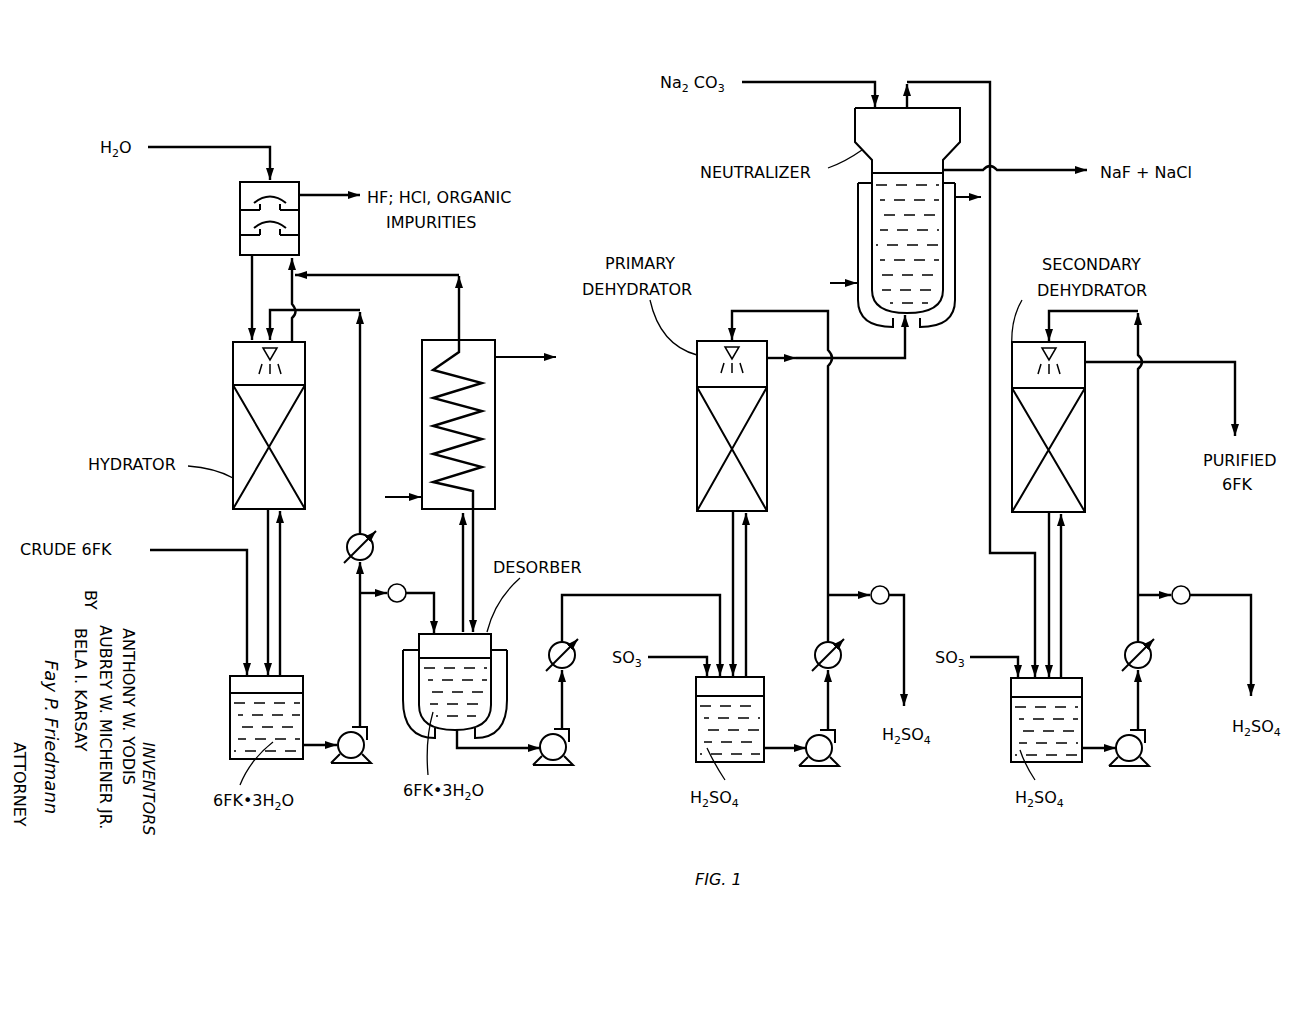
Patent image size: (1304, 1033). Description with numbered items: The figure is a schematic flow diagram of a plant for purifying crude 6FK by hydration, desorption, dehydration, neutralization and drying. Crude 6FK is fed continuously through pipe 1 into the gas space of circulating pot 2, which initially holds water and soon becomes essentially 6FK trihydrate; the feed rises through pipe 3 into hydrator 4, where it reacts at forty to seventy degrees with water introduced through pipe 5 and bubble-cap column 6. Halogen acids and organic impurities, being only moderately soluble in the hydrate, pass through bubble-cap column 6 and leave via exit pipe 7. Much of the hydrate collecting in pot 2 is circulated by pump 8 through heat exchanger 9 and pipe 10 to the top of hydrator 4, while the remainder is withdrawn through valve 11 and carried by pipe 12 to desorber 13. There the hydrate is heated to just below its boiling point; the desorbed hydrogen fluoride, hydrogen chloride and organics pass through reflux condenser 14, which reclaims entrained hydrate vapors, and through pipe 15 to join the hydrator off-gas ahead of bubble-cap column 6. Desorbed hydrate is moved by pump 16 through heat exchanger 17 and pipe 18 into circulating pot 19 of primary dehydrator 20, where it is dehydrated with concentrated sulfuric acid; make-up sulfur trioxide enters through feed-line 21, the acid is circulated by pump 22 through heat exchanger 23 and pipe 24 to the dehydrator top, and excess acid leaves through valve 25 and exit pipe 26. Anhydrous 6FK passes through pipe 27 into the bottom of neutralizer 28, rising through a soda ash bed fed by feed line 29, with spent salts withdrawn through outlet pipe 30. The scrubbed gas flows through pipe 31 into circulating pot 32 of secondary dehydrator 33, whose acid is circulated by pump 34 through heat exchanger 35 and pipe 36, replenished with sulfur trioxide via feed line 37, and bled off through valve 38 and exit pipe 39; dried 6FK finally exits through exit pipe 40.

The pipe 1 is at (247, 586).
The circulating pot 2 is at (230, 723).
The pipe 3 is at (280, 610).
The hydrator 4 is at (233, 412).
The pipe 5 is at (207, 147).
The bubble-cap column 6 is at (240, 216).
The exit pipe 7 is at (316, 195).
The pump 8 is at (347, 740).
The heat exchanger 9 is at (374, 547).
The pipe 10 is at (360, 436).
The valve 11 is at (395, 603).
The pipe 12 is at (434, 592).
The desorber 13 is at (507, 660).
The reflux condenser 14 is at (495, 440).
The pipe 15 is at (398, 275).
The pump 16 is at (565, 760).
The heat exchanger 17 is at (575, 668).
The pipe 18 is at (647, 595).
The circulating pot 19 is at (696, 730).
The primary dehydrator 20 is at (697, 473).
The feed-line 21 is at (664, 656).
The pump 22 is at (830, 764).
The heat exchanger 23 is at (840, 664).
The pipe 24 is at (830, 512).
The valve 25 is at (886, 587).
The exit pipe 26 is at (906, 640).
The pipe 27 is at (875, 360).
The neutralizer 28 is at (858, 257).
The feed line 29 is at (820, 81).
The outlet pipe 30 is at (1035, 170).
The pipe 31 is at (992, 248).
The circulating pot 32 is at (1010, 726).
The secondary dehydrator 33 is at (1085, 461).
The pump 34 is at (1143, 765).
The heat exchanger 35 is at (1150, 667).
The pipe 36 is at (1140, 550).
The feed line 37 is at (977, 656).
The valve 38 is at (1193, 588).
The exit pipe 39 is at (1254, 613).
The exit pipe 40 is at (1170, 362).